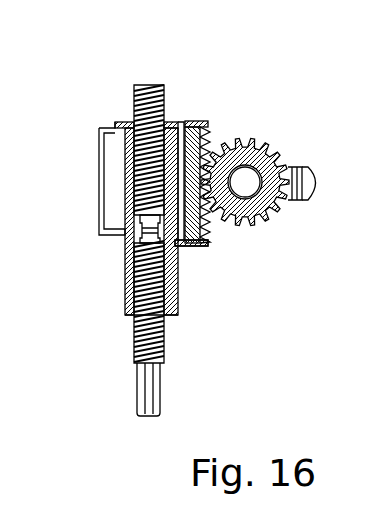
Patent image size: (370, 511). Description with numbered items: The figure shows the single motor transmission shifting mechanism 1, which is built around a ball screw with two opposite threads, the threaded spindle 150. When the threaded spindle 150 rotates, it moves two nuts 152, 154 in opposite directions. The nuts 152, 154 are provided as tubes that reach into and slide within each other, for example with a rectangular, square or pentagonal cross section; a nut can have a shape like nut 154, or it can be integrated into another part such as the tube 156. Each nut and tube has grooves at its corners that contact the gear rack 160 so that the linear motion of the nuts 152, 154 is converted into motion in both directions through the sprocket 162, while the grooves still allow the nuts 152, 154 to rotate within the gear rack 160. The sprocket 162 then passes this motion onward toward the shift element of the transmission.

The single motor transmission shifting mechanism 1 is at (242, 112).
The threaded spindle 150 is at (135, 333).
The nut 152 is at (179, 314).
The nut 154 is at (174, 118).
The tube 156 is at (124, 277).
The gear rack 160 is at (202, 121).
The sprocket 162 is at (257, 224).